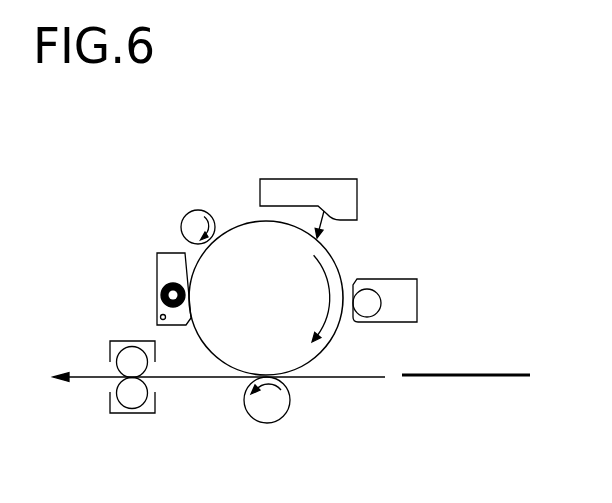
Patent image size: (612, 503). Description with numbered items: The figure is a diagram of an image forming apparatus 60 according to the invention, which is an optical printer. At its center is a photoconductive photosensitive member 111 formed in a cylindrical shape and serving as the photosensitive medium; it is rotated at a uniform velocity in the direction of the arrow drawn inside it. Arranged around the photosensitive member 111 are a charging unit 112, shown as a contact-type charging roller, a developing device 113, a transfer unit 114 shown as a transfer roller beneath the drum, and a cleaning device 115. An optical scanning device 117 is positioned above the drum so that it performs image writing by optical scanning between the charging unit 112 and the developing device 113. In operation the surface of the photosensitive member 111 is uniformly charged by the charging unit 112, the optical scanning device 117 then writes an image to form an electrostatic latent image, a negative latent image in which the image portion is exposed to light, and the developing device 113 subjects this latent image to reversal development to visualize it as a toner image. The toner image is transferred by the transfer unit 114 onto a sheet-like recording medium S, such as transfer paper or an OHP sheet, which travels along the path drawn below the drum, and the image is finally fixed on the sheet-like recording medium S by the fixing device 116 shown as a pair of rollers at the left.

The image forming apparatus 60 is at (316, 149).
The photosensitive member 111 is at (284, 309).
The charging unit 112 is at (196, 210).
The developing device 113 is at (407, 278).
The transfer unit 114 is at (292, 406).
The cleaning device 115 is at (158, 252).
The fixing device 116 is at (126, 341).
The optical scanning device 117 is at (358, 189).
The sheet-like recording medium S is at (473, 374).